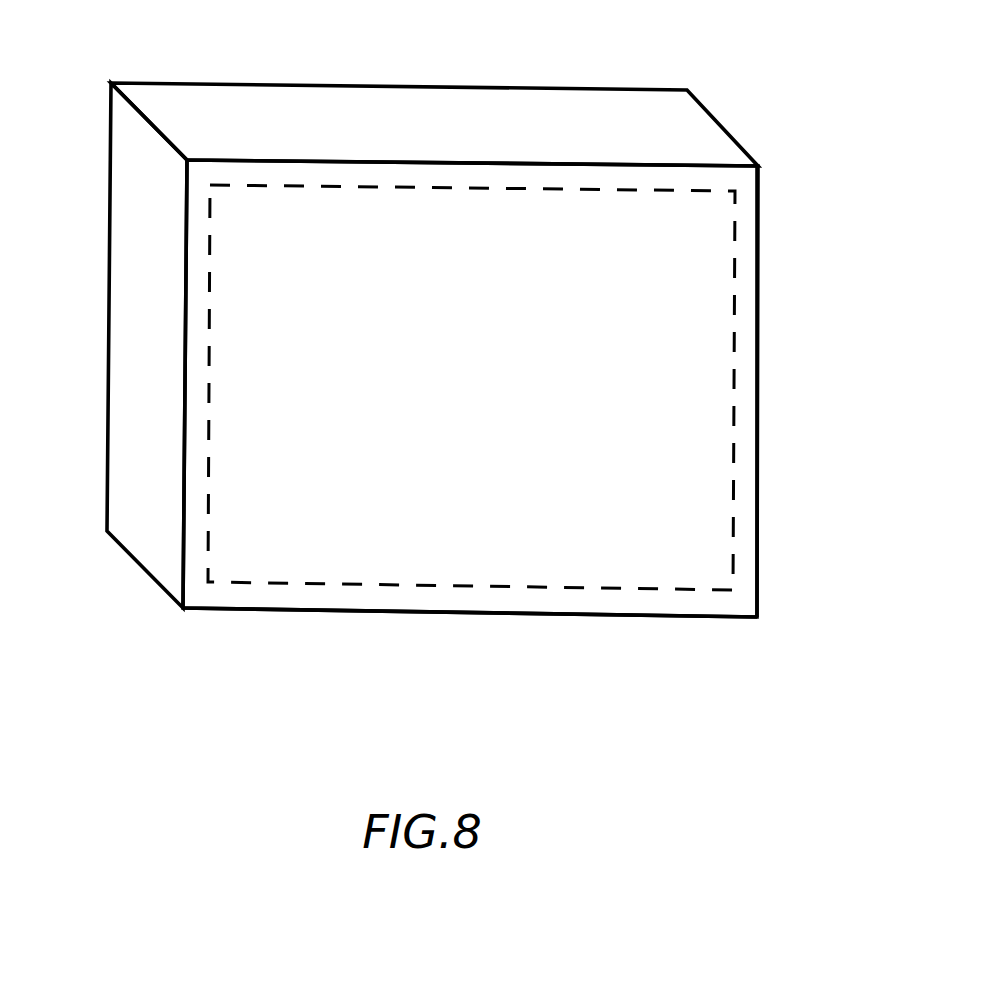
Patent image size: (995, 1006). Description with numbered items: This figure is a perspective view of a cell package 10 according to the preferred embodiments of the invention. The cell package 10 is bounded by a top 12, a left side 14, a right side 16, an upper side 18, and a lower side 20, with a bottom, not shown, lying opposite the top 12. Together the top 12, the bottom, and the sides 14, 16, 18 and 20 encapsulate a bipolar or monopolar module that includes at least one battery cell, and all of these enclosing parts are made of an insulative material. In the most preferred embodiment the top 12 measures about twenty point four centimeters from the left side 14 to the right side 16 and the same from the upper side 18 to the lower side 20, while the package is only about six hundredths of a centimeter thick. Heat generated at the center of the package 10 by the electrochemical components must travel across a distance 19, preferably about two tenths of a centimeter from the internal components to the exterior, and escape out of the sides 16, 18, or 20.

The cell package 10 is at (457, 348).
The top 12 is at (720, 225).
The left side 14 is at (137, 390).
The right side 16 is at (759, 292).
The upper side 18 is at (443, 108).
The distance 19 is at (745, 402).
The lower side 20 is at (638, 618).